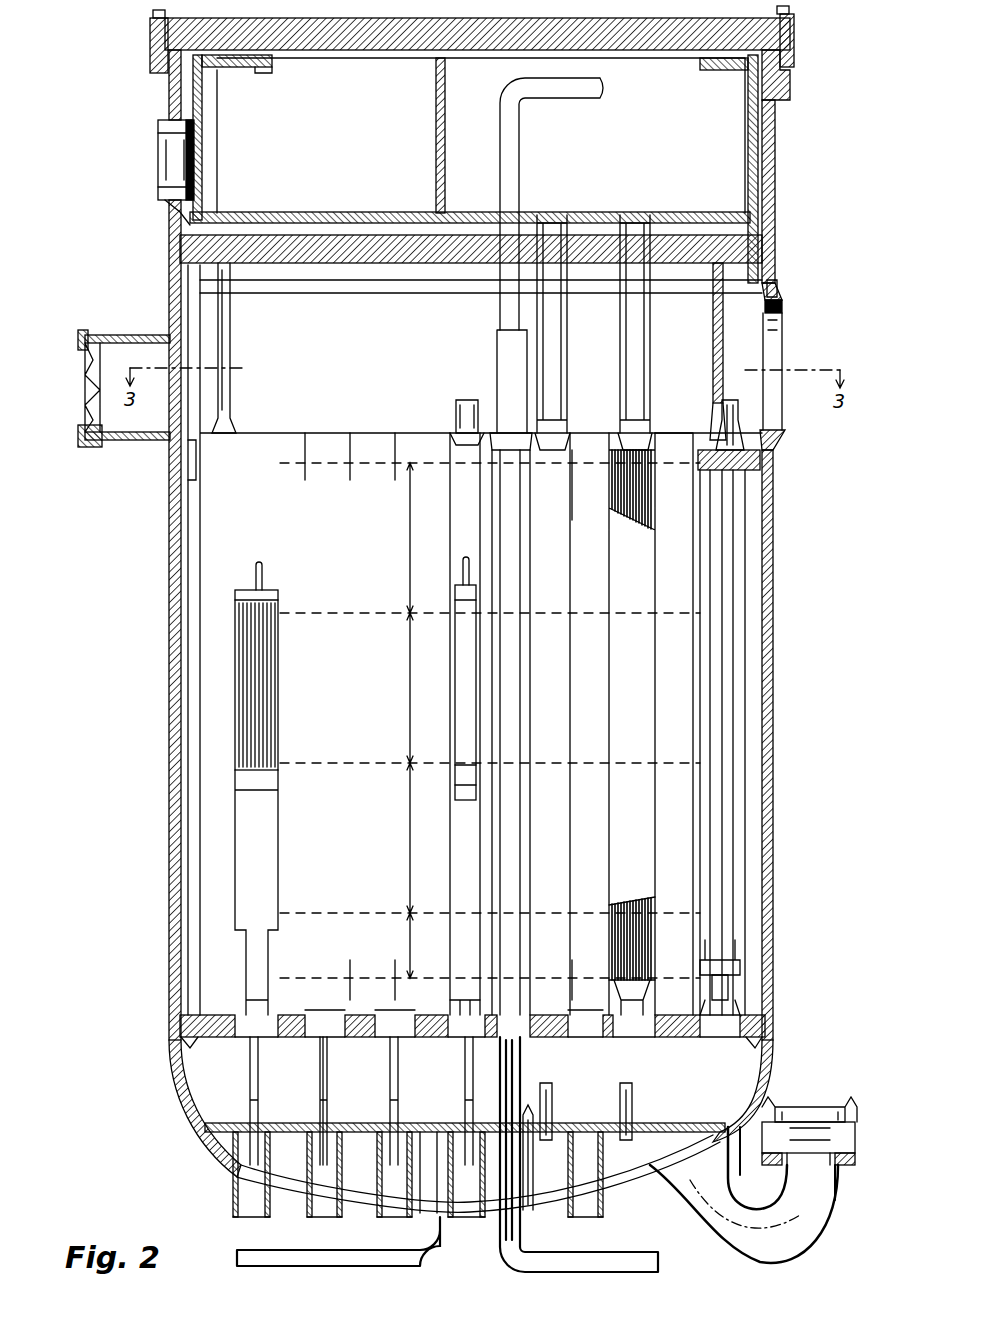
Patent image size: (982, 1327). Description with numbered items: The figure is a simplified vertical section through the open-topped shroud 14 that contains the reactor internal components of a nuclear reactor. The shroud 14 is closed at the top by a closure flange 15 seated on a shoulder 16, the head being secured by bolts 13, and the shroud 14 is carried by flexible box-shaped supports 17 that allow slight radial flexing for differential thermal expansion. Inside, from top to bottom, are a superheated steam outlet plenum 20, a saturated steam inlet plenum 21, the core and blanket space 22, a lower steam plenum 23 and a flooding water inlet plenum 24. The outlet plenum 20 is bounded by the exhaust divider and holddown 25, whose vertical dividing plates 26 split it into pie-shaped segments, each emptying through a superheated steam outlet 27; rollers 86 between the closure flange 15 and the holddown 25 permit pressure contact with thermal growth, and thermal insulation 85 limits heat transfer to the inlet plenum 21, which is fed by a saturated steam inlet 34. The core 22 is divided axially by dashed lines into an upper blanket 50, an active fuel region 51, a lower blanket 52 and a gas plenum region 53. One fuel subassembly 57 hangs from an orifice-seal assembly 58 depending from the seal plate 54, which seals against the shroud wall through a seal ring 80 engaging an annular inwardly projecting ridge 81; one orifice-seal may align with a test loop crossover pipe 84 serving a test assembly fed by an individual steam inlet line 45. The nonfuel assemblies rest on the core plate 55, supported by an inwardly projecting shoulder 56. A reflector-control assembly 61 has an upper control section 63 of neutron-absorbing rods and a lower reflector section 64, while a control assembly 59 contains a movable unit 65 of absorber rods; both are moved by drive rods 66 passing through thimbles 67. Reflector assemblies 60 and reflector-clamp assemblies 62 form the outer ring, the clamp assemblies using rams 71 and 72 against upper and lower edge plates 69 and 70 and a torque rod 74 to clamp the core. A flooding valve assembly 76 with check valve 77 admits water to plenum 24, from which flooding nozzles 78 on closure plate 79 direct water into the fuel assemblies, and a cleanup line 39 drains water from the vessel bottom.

The bolts 13 is at (723, 350).
The shroud 14 is at (773, 625).
The closure flange 15 is at (790, 45).
The shoulder 16 is at (778, 90).
The flexible box-shaped supports 17 is at (120, 333).
The superheated steam outlet plenum 20 is at (326, 129).
The saturated steam inlet plenum 21 is at (370, 339).
The core and blanket space 22 is at (186, 641).
The lower steam plenum 23 is at (298, 1082).
The flooding water inlet plenum 24 is at (659, 1163).
The exhaust divider and holddown 25 is at (165, 95).
The vertical dividing plates 26 is at (434, 152).
The superheated steam outlet 27 is at (168, 206).
The saturated steam inlet 34 is at (782, 306).
The cleanup line 39 is at (425, 1267).
The individual steam inlet line 45 is at (630, 1252).
The upper blanket 50 is at (490, 538).
The active fuel region 51 is at (490, 688).
The lower blanket 52 is at (490, 838).
The gas plenum region 53 is at (490, 956).
The seal plate 54 is at (398, 268).
The core plate 55 is at (612, 1040).
The inwardly projecting shoulder 56 is at (735, 1052).
The fuel subassemblies 57 is at (655, 560).
The orifice-seal assembly 58 is at (622, 355).
The control assemblies 59 is at (440, 585).
The reflector assemblies 60 is at (667, 433).
The reflector-control assemblies 61 is at (266, 590).
The reflector-clamp assemblies 62 is at (736, 690).
The upper control section 63 is at (280, 700).
The lower reflector section 64 is at (280, 848).
The unit of neutron-absorbing rods 65 is at (480, 665).
The drive rods 66 is at (327, 1075).
The thimbles 67 is at (233, 1182).
The upper edge plate 69 is at (750, 462).
The lower edge plate 70 is at (740, 990).
The upper ram 71 is at (735, 430).
The lower ram 72 is at (735, 960).
The torque rod 74 is at (730, 575).
The flooding valve assembly 76 is at (840, 1205).
The check valve 77 is at (805, 1122).
The flooding nozzles 78 is at (640, 1100).
The closure plate 79 is at (690, 1125).
The seal ring 80 is at (787, 285).
The annular inwardly projecting ridge 81 is at (186, 300).
The test loop crossover pipe 84 is at (572, 100).
The thermal insulation 85 is at (300, 218).
The rollers 86 is at (215, 75).